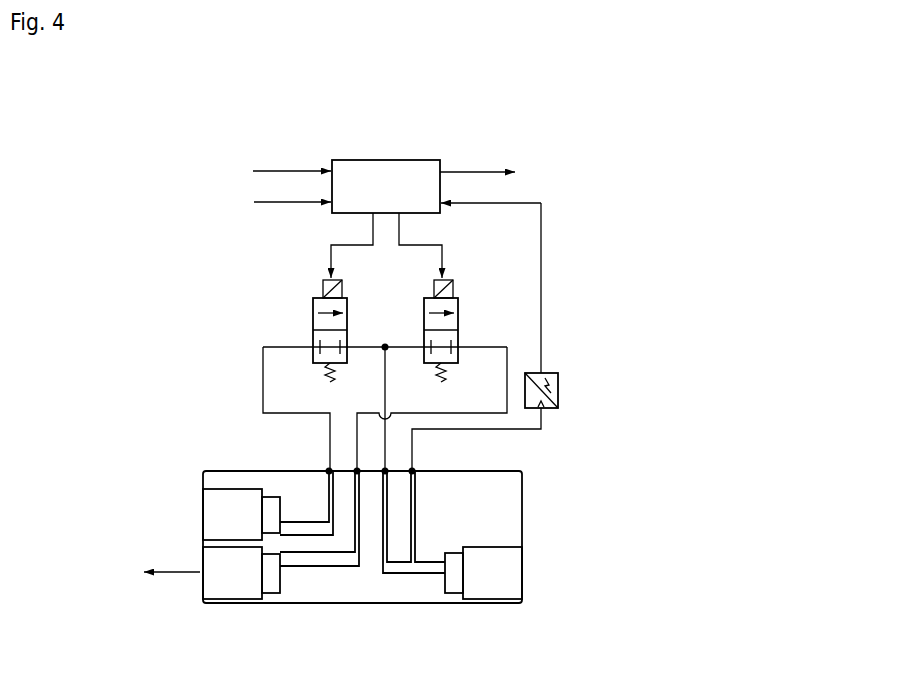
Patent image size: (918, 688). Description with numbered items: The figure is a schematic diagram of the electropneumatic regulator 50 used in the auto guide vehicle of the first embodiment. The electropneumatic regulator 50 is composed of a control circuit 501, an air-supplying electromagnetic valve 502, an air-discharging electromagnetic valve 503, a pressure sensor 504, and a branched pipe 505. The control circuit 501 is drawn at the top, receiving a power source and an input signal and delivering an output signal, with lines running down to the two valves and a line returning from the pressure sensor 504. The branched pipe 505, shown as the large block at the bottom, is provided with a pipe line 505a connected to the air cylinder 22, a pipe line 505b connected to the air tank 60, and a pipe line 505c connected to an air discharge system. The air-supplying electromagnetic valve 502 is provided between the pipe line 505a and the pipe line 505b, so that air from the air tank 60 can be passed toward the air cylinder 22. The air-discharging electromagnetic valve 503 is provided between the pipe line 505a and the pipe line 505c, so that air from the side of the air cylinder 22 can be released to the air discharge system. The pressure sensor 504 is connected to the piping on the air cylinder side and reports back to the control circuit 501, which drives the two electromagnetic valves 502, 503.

The electropneumatic regulator 50 is at (708, 341).
The control circuit 501 is at (387, 160).
The air-supplying electromagnetic valve 502 is at (314, 298).
The air-discharging electromagnetic valve 503 is at (457, 300).
The pressure sensor 504 is at (558, 390).
The branched pipe 505 is at (510, 494).
The pipe line 505a is at (488, 585).
The pipe line 505b is at (226, 502).
The pipe line 505c is at (232, 585).
The air tank 60 is at (201, 516).
The air cylinder 22 is at (522, 572).